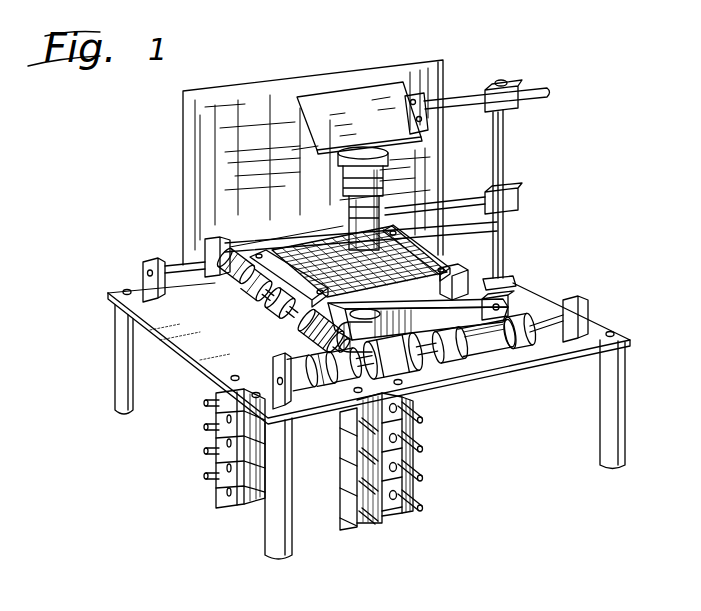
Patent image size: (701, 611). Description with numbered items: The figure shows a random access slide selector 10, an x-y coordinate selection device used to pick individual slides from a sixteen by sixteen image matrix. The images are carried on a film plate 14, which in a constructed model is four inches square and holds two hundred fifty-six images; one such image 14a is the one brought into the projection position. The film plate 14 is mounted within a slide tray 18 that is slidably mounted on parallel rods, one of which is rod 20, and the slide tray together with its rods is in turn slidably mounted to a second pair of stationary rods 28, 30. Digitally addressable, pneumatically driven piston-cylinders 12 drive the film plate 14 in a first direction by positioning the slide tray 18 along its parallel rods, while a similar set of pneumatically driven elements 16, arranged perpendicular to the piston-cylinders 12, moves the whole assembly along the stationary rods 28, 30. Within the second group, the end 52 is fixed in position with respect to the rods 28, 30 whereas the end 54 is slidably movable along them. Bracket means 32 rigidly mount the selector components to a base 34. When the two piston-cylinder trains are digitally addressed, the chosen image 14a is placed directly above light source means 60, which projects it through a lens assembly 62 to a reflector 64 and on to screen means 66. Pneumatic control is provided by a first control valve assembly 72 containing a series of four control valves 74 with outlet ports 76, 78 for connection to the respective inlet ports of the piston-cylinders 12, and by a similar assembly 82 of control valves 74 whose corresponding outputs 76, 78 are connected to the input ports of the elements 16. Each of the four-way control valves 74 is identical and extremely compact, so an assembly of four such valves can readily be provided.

The random access slide selector 10 is at (365, 304).
The piston-cylinders 12 is at (253, 306).
The film plate 14 is at (413, 263).
The image 14a is at (297, 150).
The pneumatically driven elements 16 is at (299, 348).
The slide tray 18 is at (462, 296).
The parallel rod 20 is at (488, 306).
The stationary rod 28 is at (553, 297).
The stationary rod 30 is at (173, 263).
The bracket means 32 is at (143, 277).
The base 34 is at (187, 340).
The fixed end 52 is at (274, 370).
The slidably movable end 54 is at (513, 345).
The light source means 60 is at (386, 308).
The lens assembly 62 is at (386, 186).
The reflector 64 is at (340, 103).
The screen means 66 is at (196, 110).
The first control valve assembly 72 is at (247, 505).
The control valves 74 is at (210, 414).
The outlet port 76 is at (210, 473).
The outlet port 78 is at (223, 490).
The control valve assembly 82 is at (358, 528).